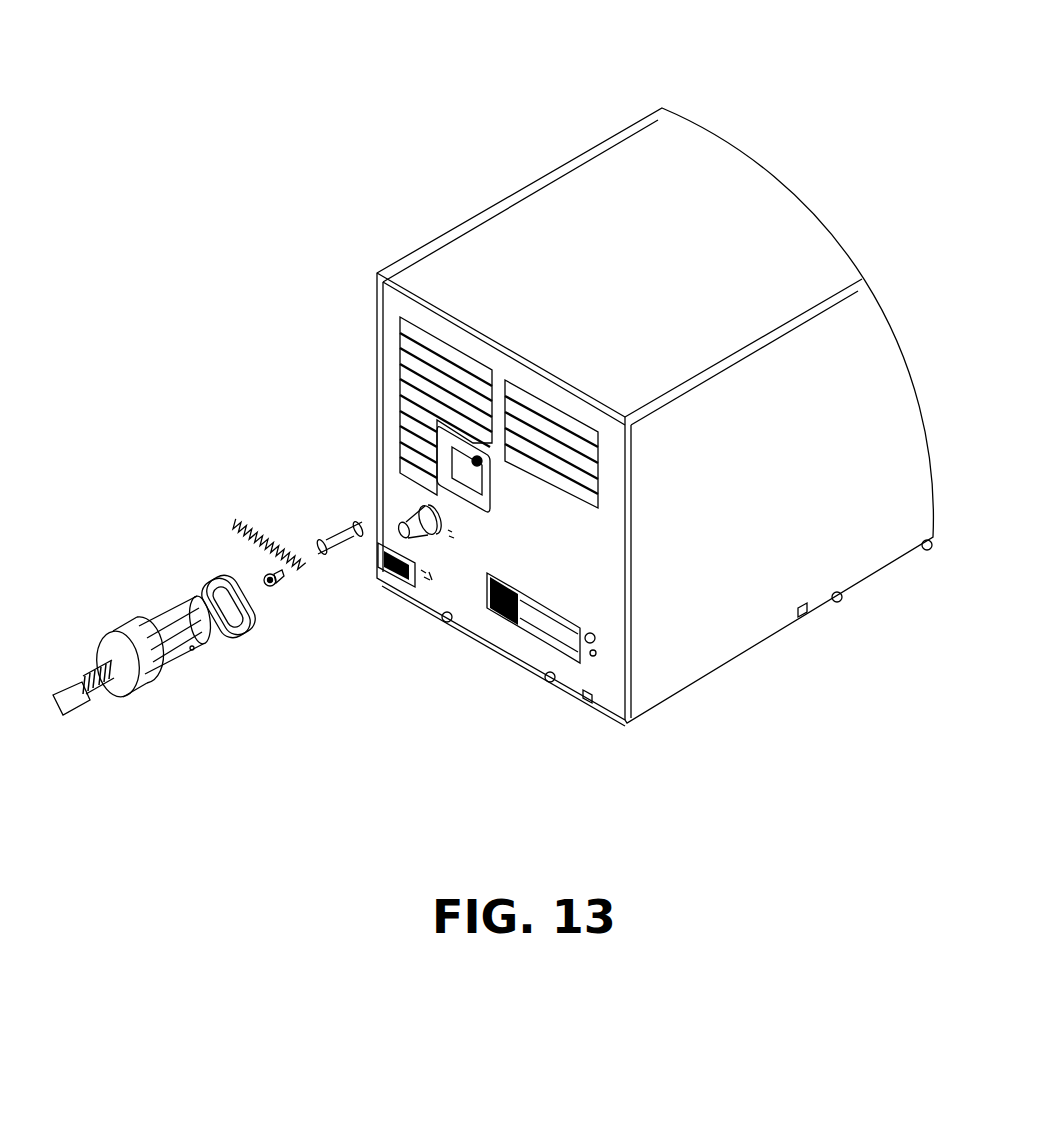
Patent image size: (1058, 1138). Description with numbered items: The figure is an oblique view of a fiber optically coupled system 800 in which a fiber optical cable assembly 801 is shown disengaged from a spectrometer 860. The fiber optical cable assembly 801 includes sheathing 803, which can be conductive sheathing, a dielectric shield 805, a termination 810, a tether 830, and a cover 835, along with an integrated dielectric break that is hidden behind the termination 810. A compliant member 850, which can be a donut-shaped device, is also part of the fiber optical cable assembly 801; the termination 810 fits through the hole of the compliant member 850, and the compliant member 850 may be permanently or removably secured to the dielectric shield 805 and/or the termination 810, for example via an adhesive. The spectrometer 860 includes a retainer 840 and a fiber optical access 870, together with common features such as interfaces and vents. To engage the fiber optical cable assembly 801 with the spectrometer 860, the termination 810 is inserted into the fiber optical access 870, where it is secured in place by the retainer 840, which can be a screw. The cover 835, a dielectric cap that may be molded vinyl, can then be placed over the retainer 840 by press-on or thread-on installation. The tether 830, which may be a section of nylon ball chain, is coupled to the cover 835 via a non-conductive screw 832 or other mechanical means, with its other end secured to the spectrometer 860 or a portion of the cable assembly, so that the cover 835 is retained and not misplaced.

The fiber optically coupled system 800 is at (143, 76).
The fiber optical cable assembly 801 is at (190, 903).
The sheathing 803 is at (93, 680).
The dielectric shield 805 is at (123, 700).
The termination 810 is at (185, 653).
The tether 830 is at (233, 523).
The non-conductive screw 832 is at (272, 590).
The cover 835 is at (345, 525).
The retainer 840 is at (477, 462).
The compliant member 850 is at (240, 627).
The spectrometer 860 is at (335, 239).
The fiber optical access 870 is at (451, 472).